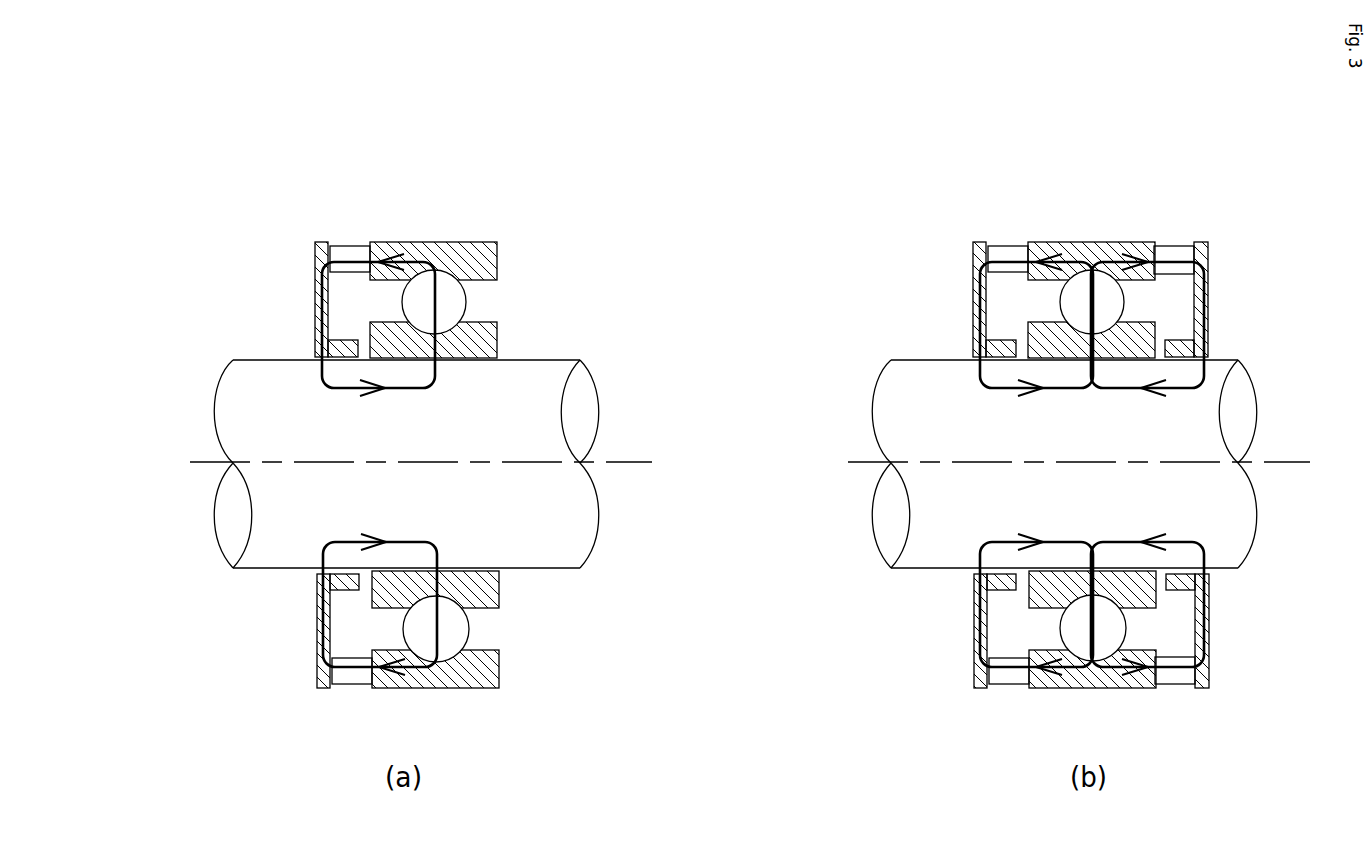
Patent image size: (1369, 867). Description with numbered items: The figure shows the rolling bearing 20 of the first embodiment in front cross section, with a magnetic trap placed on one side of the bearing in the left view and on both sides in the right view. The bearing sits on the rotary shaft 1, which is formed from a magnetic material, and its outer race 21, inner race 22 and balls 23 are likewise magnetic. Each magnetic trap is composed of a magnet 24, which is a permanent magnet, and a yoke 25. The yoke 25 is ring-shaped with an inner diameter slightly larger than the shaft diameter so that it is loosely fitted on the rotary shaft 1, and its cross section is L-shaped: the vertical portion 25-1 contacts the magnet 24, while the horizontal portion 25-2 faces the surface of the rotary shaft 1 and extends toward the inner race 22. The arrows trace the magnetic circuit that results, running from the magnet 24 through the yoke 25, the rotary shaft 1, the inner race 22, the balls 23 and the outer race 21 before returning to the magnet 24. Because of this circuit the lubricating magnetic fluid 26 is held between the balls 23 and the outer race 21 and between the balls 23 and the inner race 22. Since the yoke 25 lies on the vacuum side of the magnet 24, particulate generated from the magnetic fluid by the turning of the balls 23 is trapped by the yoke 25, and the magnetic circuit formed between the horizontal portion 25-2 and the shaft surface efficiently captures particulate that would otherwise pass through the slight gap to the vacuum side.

The rotary shaft 1 is at (470, 448).
The rolling bearing 20 is at (403, 63).
The outer race 21 is at (458, 242).
The inner race 22 is at (498, 340).
The balls 23 is at (463, 300).
The magnet 24 is at (346, 247).
The yoke 25 is at (731, 426).
The vertical portion 25-1 is at (320, 308).
The horizontal portion 25-2 is at (347, 350).
The lubricating magnetic fluid 26 is at (463, 265).